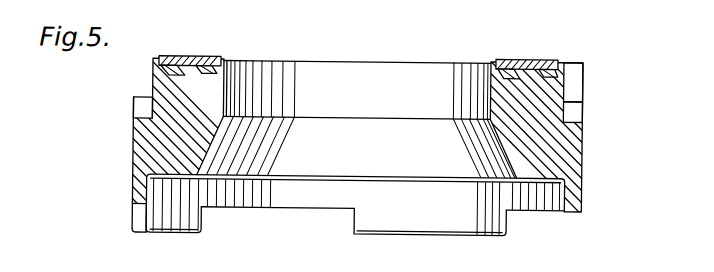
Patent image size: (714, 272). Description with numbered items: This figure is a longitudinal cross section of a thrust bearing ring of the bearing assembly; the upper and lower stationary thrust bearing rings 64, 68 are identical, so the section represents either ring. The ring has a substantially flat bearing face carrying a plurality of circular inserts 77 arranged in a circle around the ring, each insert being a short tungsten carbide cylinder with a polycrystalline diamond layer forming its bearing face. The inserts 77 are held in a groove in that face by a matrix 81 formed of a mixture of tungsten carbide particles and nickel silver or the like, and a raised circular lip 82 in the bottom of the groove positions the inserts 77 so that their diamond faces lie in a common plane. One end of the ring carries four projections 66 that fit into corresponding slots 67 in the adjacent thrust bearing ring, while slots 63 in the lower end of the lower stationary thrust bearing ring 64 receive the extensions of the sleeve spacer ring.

The slots 63 is at (145, 93).
The lower stationary thrust bearing ring 64 is at (313, 148).
The upper stationary thrust bearing ring 68 is at (127, 146).
The projections 66 is at (187, 219).
The slots 67 is at (295, 216).
The circular inserts 77 is at (193, 58).
The matrix 81 is at (220, 74).
The raised circular lip 82 is at (183, 80).